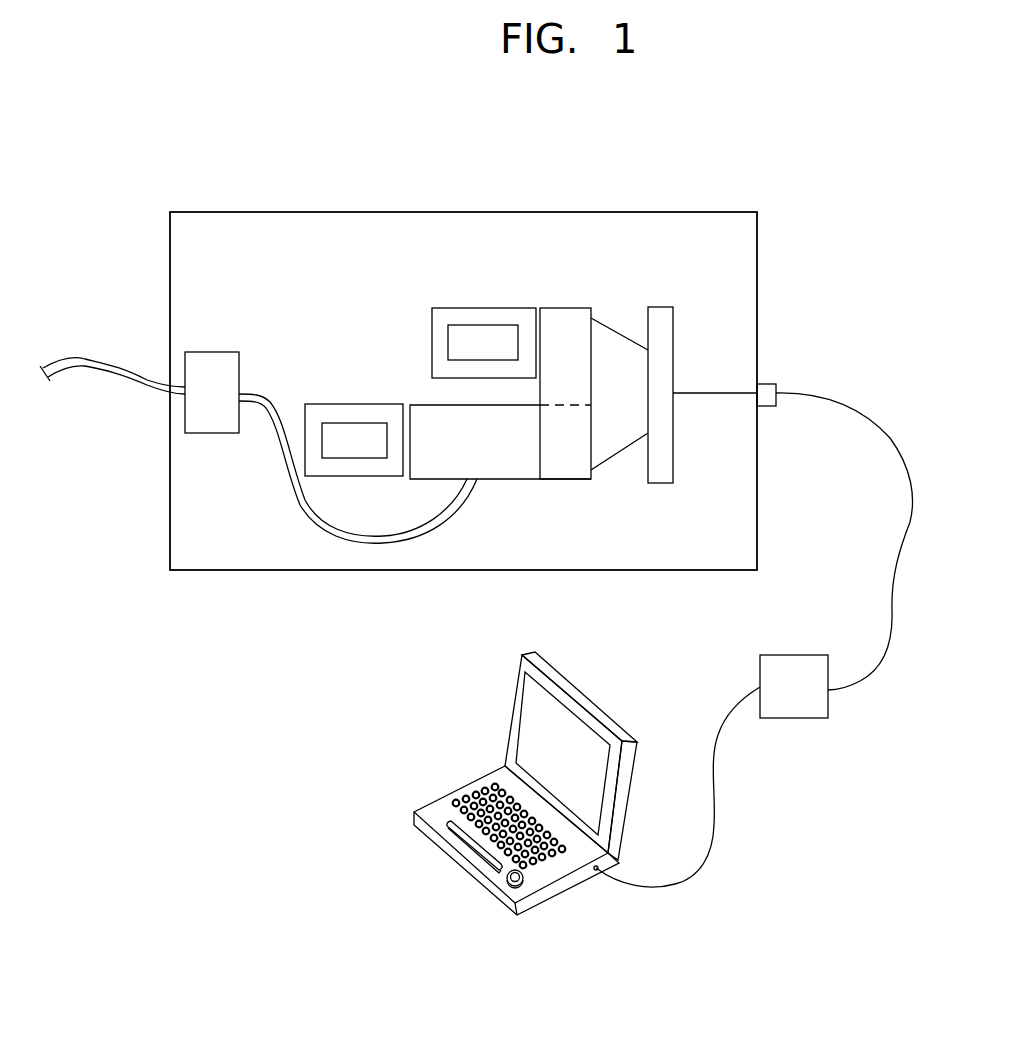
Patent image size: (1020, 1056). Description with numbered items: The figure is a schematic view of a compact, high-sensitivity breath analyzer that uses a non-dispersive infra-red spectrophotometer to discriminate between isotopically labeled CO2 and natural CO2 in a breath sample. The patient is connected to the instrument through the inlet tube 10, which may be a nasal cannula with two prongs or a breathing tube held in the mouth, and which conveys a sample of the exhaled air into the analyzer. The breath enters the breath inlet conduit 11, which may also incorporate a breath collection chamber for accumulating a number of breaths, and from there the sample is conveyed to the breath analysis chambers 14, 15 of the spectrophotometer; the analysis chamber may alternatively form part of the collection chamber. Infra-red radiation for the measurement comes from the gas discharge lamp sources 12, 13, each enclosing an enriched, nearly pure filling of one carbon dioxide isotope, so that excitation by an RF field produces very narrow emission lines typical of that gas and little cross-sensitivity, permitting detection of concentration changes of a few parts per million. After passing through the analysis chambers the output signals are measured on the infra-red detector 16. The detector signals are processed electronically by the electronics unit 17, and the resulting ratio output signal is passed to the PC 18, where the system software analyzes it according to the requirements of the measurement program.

The inlet tube 10 is at (93, 364).
The breath inlet conduit 11 is at (208, 358).
The gas discharge lamp source 12 is at (442, 315).
The gas discharge lamp source 13 is at (333, 404).
The breath analysis chamber 14 is at (573, 309).
The breath analysis chamber 15 is at (538, 472).
The infra-red detector 16 is at (655, 307).
The electronics unit 17 is at (806, 661).
The PC 18 is at (533, 717).